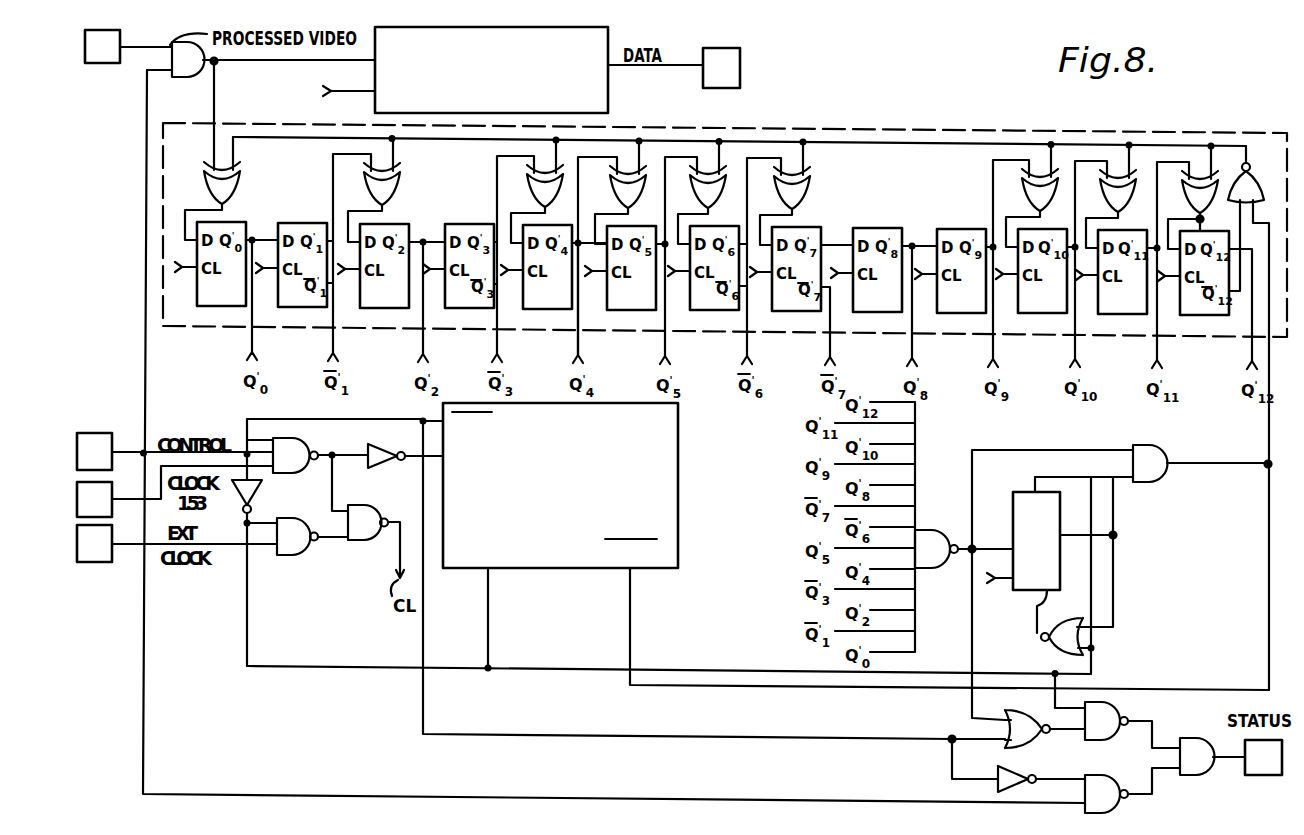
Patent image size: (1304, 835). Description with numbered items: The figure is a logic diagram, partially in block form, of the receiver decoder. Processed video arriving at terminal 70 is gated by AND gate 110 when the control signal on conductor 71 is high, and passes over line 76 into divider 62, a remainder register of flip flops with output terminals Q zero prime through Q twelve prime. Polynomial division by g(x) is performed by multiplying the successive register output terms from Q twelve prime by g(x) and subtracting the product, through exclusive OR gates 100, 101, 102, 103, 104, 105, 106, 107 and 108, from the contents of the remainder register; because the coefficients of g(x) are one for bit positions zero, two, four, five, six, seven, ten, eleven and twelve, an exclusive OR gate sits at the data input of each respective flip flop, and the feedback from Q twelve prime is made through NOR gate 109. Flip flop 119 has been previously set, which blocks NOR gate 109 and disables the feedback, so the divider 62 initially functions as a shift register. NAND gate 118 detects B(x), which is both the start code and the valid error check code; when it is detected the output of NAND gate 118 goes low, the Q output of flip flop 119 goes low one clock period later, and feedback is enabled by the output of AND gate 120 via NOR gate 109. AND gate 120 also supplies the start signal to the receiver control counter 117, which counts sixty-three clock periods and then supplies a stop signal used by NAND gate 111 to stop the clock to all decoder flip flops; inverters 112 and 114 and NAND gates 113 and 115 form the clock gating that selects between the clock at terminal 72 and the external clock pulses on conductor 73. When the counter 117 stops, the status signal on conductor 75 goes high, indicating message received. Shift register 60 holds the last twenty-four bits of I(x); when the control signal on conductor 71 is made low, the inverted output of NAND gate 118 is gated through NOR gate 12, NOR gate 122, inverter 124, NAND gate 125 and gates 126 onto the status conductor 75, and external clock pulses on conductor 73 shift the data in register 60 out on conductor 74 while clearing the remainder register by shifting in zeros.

The processed video input terminal 70 is at (105, 64).
The AND gate 110 is at (190, 78).
The data line to divider 76 is at (215, 99).
The 24 bit shift register 60 is at (608, 101).
The output data conductor 74 is at (700, 70).
The divider 62 is at (785, 126).
The exclusive OR gate 100 is at (240, 184).
The exclusive OR gate 101 is at (400, 186).
The exclusive OR gate 102 is at (536, 191).
The exclusive OR gate 103 is at (617, 192).
The exclusive OR gate 104 is at (700, 193).
The exclusive OR gate 105 is at (808, 193).
The exclusive OR gate 106 is at (1025, 199).
The exclusive OR gate 107 is at (1108, 198).
The exclusive OR gate 108 is at (1192, 200).
The NOR gate 109 is at (1261, 171).
The control signal conductor 71 is at (122, 432).
The clock input terminal 72 is at (121, 498).
The external clock conductor 73 is at (118, 563).
The NAND gate 111 is at (300, 439).
The inverter 112 is at (262, 485).
The NAND gate 113 is at (295, 556).
The inverter 114 is at (385, 470).
The NAND gate 115 is at (365, 541).
The receiver control counter 117 is at (678, 476).
The NAND gate 118 is at (935, 530).
The flip flop 119 is at (1015, 491).
The AND gate 120 is at (1160, 445).
The NOR gate 12 is at (1050, 648).
The NOR gate 122 is at (1005, 736).
The inverter 124 is at (1020, 768).
The NAND gate 125 is at (1108, 775).
The output gates 126 is at (1116, 703).
The status signal conductor 75 is at (1236, 762).